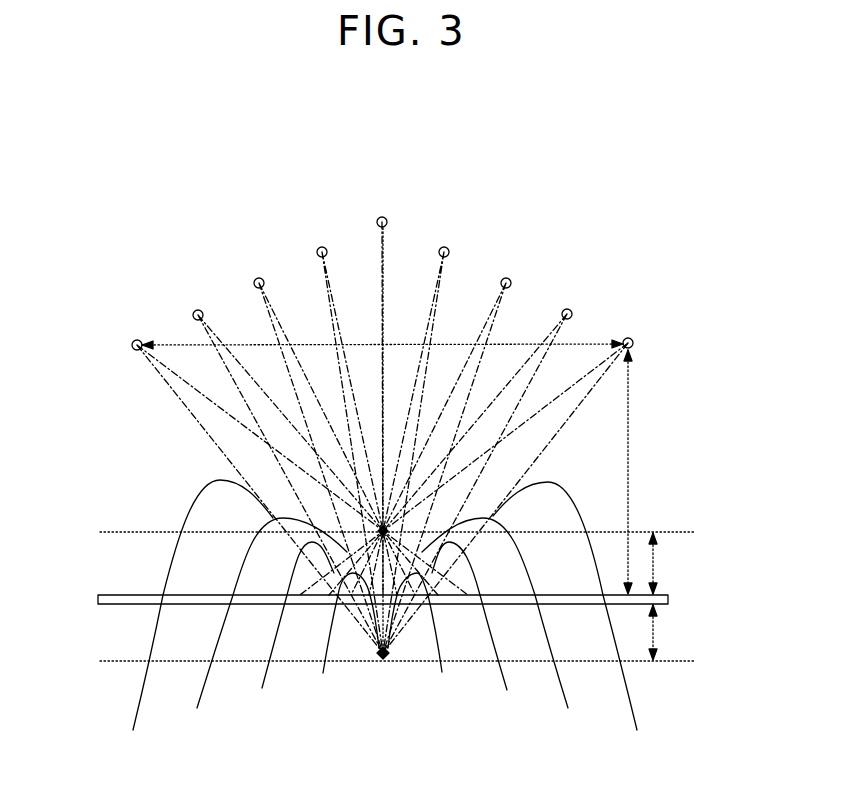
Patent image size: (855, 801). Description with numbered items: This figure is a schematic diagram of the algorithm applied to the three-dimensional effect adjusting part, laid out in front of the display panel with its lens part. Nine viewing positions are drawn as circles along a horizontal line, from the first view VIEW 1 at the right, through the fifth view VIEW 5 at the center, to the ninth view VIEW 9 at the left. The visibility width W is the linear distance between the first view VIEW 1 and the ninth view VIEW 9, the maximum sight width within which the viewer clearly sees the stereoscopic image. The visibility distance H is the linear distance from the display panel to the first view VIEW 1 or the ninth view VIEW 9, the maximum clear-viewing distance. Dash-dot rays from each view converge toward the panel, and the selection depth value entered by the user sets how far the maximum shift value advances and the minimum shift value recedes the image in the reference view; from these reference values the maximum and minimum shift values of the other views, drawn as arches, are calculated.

The ninth view VIEW 9 is at (106, 333).
The fifth view VIEW 5 is at (379, 207).
The first view VIEW 1 is at (649, 331).
The visibility width W is at (265, 345).
The visibility distance H is at (634, 472).